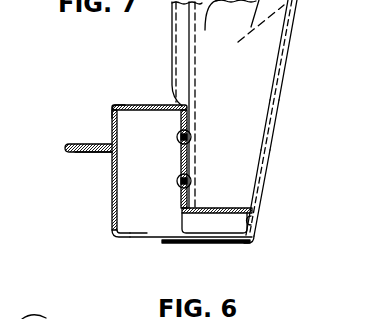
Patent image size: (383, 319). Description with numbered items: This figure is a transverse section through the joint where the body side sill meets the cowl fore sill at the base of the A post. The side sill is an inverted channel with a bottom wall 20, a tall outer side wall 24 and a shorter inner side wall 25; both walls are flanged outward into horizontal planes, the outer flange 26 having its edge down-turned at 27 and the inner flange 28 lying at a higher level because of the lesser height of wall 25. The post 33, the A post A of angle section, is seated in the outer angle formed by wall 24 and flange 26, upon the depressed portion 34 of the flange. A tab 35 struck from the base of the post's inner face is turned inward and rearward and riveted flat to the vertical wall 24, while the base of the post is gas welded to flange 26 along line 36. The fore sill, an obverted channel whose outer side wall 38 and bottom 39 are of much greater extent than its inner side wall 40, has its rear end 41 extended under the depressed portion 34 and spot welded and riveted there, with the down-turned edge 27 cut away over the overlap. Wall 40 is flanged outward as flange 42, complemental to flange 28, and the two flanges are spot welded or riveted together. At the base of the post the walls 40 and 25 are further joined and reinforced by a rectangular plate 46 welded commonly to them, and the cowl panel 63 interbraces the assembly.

The bottom wall 20 is at (143, 106).
The outer side wall 24 is at (181, 160).
The inner side wall 25 is at (110, 115).
The outer flange 26 is at (209, 207).
The down-turned edge 27 is at (253, 230).
The inner flange 28 is at (78, 143).
The post 33 is at (260, 48).
The depressed portion 34 is at (225, 222).
The tab 35 is at (193, 160).
The weld line 36 is at (226, 207).
The outer side wall of fore sill 38 is at (258, 211).
The bottom of fore sill 39 is at (148, 238).
The inner side wall of fore sill 40 is at (110, 189).
The rear end of fore sill 41 is at (203, 240).
The flange of fore sill 42 is at (88, 153).
The rectangular plate 46 is at (118, 224).
The cowl panel 63 is at (278, 108).
The A post A is at (250, 142).